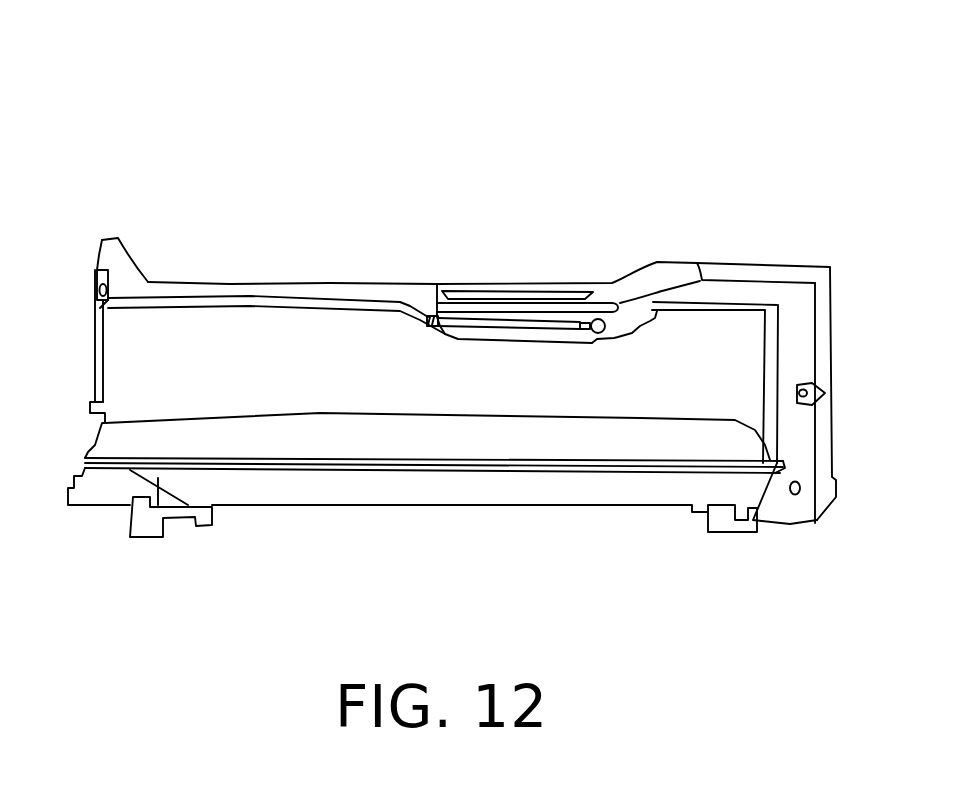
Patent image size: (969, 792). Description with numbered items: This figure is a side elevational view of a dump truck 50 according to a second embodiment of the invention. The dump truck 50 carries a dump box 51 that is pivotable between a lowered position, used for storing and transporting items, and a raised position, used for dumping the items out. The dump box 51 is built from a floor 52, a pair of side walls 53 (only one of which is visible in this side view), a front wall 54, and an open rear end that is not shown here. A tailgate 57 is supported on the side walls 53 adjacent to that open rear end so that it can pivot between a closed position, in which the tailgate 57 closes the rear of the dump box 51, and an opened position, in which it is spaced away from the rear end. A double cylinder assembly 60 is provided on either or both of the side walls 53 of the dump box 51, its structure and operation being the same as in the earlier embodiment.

The dump truck 50 is at (497, 183).
The dump box 51 is at (110, 263).
The floor 52 is at (315, 487).
The side walls 53 is at (360, 389).
The front wall 54 is at (100, 368).
The tailgate 57 is at (823, 330).
The double cylinder assembly 60 is at (527, 348).